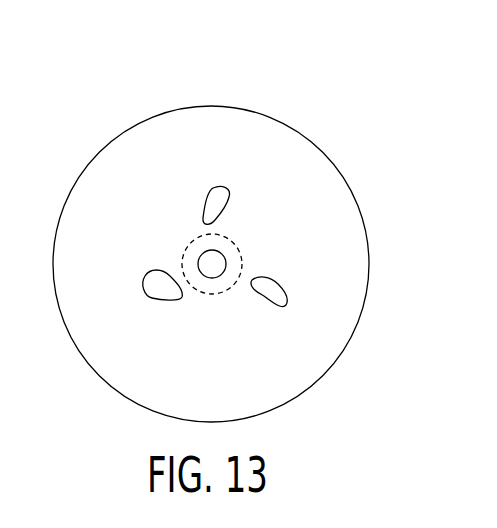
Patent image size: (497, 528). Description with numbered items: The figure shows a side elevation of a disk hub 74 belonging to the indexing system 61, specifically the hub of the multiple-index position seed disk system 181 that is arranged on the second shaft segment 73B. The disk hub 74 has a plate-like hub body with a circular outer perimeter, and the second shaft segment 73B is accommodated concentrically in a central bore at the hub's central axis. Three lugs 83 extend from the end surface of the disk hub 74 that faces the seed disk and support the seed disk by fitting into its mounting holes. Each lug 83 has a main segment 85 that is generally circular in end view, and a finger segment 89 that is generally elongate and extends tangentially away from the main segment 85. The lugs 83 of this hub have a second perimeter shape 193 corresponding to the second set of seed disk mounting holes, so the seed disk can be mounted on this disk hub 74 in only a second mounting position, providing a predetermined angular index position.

The indexing system 61 is at (254, 89).
The disk hub 74 is at (72, 139).
The multiple-index position seed disk system 181 is at (292, 102).
The second shaft segment 73B is at (221, 295).
The lugs 83 is at (233, 187).
The main segment 85 is at (204, 220).
The finger segment 89 is at (229, 198).
The second perimeter shape 193 is at (217, 190).